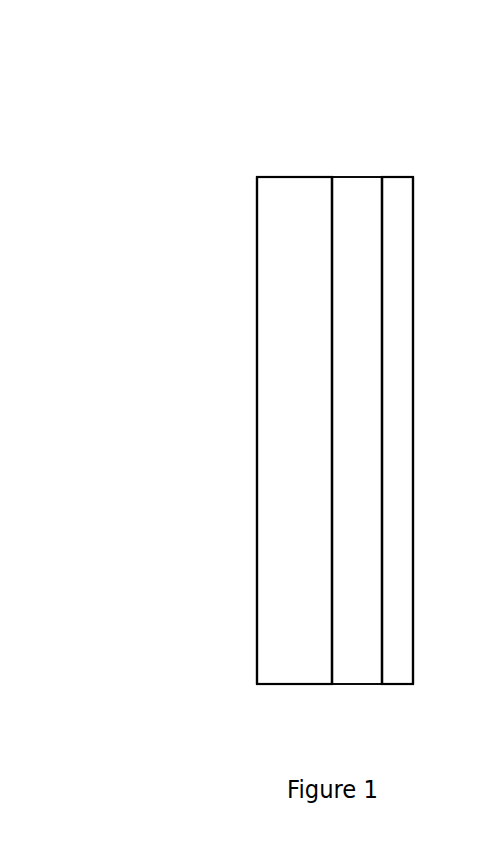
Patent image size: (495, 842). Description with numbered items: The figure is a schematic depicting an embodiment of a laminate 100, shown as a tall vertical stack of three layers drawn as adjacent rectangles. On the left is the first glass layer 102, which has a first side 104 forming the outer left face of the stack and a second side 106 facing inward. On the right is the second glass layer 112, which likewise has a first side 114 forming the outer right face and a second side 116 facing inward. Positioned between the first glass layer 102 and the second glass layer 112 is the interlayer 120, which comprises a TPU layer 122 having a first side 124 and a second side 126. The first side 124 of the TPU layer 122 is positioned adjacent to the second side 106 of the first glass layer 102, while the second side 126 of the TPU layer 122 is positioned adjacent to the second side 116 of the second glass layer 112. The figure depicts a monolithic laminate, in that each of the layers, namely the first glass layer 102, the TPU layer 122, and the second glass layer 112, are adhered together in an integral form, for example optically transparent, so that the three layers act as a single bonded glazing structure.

The laminate 100 is at (418, 120).
The first glass layer 102 is at (277, 253).
The first side of first glass layer 104 is at (258, 310).
The second side of first glass layer 106 is at (332, 365).
The second glass layer 112 is at (398, 228).
The first side of second glass layer 114 is at (413, 285).
The second side of second glass layer 116 is at (382, 328).
The interlayer 120 is at (358, 196).
The TPU layer 122 is at (355, 400).
The first side of TPU layer 124 is at (332, 458).
The second side of TPU layer 126 is at (382, 509).